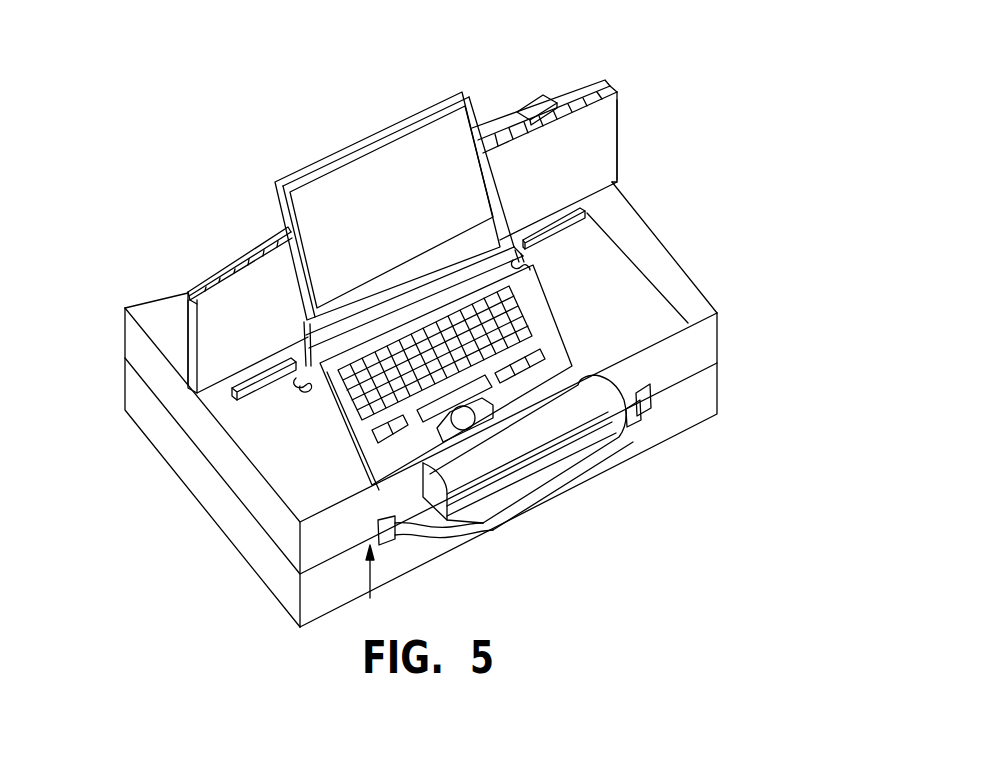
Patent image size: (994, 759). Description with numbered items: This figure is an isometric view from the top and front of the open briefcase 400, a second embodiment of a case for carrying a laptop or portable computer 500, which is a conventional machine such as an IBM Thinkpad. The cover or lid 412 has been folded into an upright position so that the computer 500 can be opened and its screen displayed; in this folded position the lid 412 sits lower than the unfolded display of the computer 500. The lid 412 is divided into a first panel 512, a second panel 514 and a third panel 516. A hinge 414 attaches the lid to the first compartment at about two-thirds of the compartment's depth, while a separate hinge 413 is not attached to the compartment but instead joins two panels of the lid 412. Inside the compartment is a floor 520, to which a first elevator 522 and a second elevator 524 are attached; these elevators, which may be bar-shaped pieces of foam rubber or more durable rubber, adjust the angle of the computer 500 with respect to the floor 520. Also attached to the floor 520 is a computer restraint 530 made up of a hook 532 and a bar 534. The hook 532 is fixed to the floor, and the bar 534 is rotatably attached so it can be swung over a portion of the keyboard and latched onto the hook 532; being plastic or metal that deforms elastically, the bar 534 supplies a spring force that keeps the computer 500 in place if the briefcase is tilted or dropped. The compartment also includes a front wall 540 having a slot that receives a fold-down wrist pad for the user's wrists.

The briefcase 400 is at (806, 122).
The cover or lid 412 is at (607, 127).
The hinge 413 is at (587, 86).
The hinge 414 is at (193, 332).
The laptop or portable computer 500 is at (561, 354).
The first panel 512 is at (610, 157).
The second panel 514 is at (152, 307).
The third panel 516 is at (263, 253).
The floor 520 is at (622, 293).
The first elevator 522 is at (575, 230).
The second elevator 524 is at (280, 362).
The computer restraint 530 is at (522, 262).
The hook 532 is at (306, 388).
The bar 534 is at (417, 312).
The front wall 540 is at (707, 337).